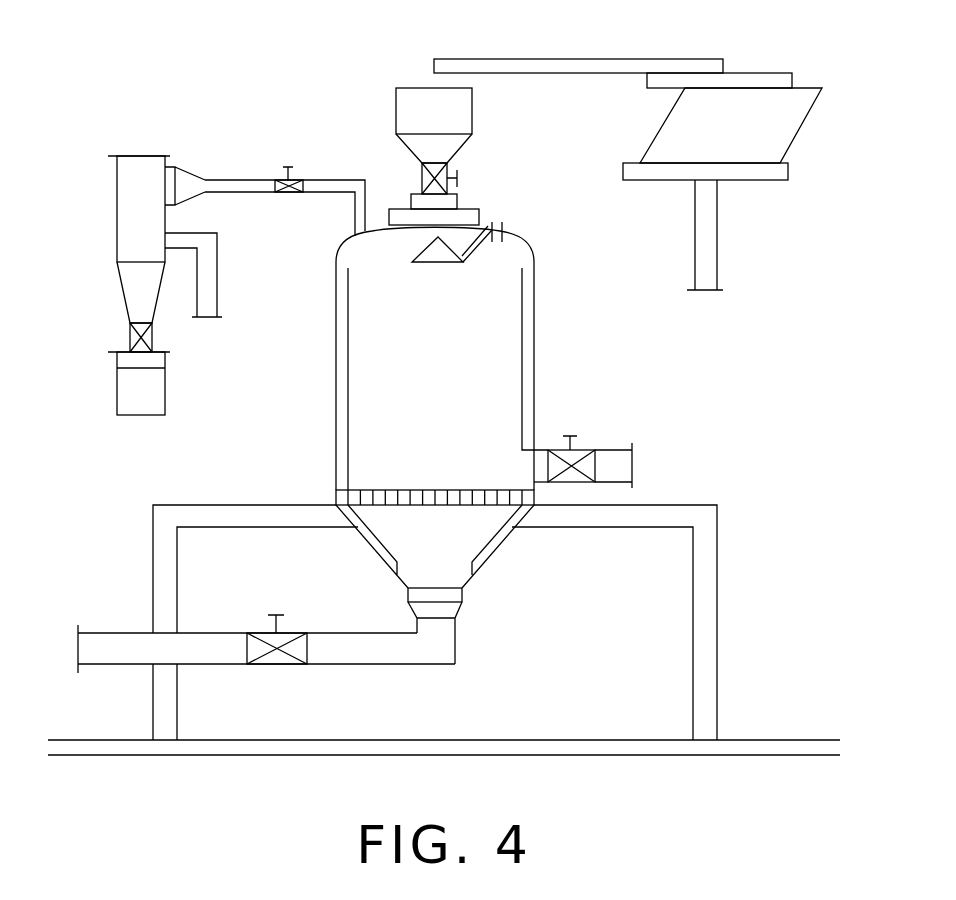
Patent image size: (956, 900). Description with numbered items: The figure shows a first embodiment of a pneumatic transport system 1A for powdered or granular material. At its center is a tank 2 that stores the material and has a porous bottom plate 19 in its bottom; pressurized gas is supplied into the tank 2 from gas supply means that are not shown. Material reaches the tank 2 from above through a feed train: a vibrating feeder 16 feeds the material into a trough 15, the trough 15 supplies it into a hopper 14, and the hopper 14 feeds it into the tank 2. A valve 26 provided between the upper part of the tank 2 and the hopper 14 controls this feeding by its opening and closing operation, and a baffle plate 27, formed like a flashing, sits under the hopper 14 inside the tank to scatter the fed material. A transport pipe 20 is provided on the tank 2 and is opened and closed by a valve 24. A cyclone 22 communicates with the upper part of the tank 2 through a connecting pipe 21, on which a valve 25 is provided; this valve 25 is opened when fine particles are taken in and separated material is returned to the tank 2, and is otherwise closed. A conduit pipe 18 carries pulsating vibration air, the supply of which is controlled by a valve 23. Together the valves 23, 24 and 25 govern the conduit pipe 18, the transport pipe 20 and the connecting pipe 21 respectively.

The pneumatic transport system 1A is at (678, 331).
The tank 2 is at (535, 350).
The hopper 14 is at (472, 112).
The trough 15 is at (503, 58).
The vibrating feeder 16 is at (796, 135).
The conduit pipe 18 is at (376, 665).
The porous bottom plate 19 is at (483, 508).
The transport pipe 20 is at (617, 450).
The connecting pipe 21 is at (236, 180).
The cyclone 22 is at (117, 218).
The valve 23 is at (273, 667).
The valve 24 is at (580, 454).
The valve 25 is at (290, 193).
The valve 26 is at (418, 178).
The baffle plate 27 is at (420, 251).